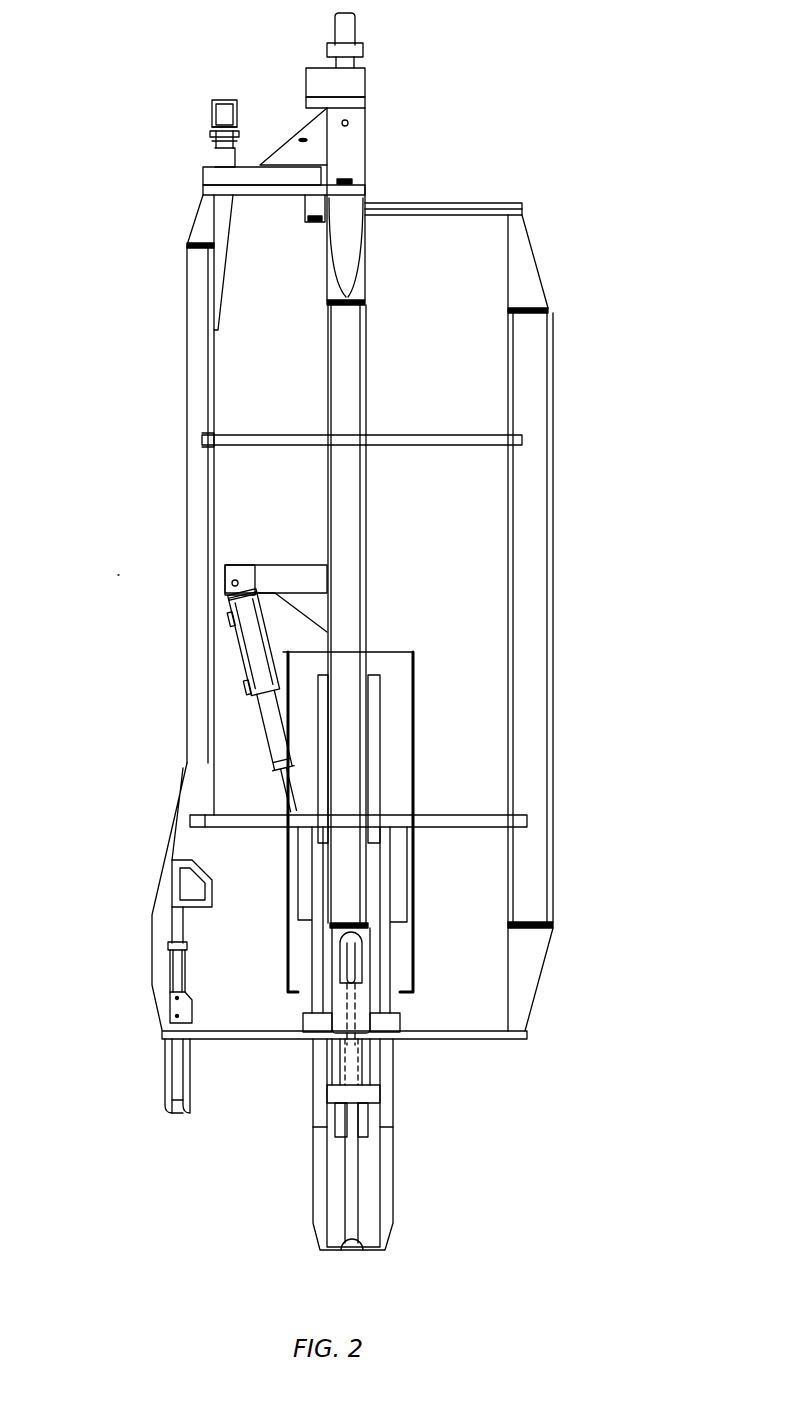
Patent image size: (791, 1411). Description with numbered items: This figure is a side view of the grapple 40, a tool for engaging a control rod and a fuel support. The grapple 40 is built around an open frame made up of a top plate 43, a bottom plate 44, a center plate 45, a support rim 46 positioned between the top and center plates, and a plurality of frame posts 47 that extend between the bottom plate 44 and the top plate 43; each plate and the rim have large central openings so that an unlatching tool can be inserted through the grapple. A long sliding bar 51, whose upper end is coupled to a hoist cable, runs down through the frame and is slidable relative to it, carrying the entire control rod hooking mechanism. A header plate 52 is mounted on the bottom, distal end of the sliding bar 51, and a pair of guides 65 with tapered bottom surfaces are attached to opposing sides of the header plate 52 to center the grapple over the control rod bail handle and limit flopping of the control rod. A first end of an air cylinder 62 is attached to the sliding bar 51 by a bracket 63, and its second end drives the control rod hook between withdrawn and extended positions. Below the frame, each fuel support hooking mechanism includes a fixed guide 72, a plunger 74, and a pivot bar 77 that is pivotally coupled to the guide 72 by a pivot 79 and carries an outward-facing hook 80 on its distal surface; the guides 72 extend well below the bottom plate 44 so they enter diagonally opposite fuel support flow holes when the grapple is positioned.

The grapple 40 is at (118, 575).
The top plate 43 is at (212, 191).
The bottom plate 44 is at (253, 1037).
The center plate 45 is at (435, 820).
The support rim 46 is at (458, 205).
The frame posts 47 is at (191, 385).
The sliding bar 51 is at (352, 30).
The header plate 52 is at (417, 658).
The air cylinder 62 is at (240, 643).
The bracket 63 is at (287, 573).
The guides 65 is at (287, 962).
The fixed guide 72 is at (385, 1208).
The plunger 74 is at (353, 1072).
The pivot bar 77 is at (352, 1163).
The pivot 79 is at (358, 1095).
The hook 80 is at (355, 1250).